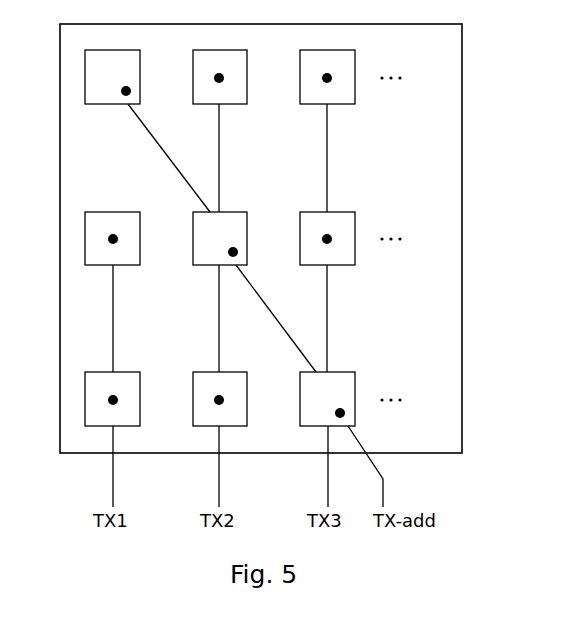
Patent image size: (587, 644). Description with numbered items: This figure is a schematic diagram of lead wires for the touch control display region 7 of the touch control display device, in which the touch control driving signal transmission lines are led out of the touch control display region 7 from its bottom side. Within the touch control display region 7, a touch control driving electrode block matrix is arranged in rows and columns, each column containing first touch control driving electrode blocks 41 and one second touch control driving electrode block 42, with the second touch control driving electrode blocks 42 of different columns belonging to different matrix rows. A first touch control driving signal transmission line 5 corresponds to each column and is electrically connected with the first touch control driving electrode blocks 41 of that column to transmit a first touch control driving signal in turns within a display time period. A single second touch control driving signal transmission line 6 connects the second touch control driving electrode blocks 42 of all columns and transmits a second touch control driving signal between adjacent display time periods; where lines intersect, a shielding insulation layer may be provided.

The first touch control driving electrode block 41 is at (214, 50).
The second touch control driving electrode block 42 is at (103, 50).
The first touch control driving signal transmission line 5 is at (219, 463).
The second touch control driving signal transmission line 6 is at (383, 493).
The touch control display region 7 is at (75, 453).